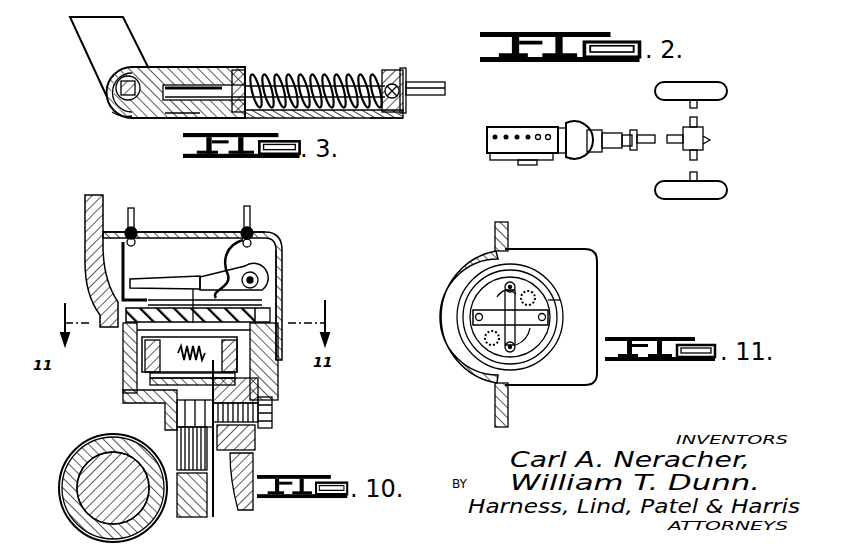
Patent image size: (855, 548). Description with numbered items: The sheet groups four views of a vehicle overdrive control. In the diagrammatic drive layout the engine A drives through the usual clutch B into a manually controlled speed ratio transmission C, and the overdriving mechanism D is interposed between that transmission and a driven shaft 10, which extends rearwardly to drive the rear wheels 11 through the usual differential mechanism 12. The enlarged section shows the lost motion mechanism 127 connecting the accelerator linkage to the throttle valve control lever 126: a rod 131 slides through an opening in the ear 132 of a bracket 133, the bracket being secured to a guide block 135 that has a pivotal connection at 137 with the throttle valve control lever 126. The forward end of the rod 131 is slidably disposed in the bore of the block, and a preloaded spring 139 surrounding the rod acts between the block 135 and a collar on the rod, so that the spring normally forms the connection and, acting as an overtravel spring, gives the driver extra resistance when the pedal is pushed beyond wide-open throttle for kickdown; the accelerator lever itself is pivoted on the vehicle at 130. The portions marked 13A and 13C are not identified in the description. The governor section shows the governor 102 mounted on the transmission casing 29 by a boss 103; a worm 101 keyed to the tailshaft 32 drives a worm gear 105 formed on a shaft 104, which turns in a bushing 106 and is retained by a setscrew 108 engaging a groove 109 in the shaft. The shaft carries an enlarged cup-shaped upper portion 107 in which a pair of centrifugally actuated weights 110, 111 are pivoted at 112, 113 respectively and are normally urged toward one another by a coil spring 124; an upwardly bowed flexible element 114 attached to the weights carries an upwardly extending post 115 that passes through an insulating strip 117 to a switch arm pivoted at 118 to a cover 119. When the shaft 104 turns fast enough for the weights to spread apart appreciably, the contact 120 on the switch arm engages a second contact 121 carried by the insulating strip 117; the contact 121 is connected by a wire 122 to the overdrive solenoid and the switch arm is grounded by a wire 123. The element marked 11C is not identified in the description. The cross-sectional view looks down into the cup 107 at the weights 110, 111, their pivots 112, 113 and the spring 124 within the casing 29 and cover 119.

In FIG. 3, the throttle valve control lever 126 is at (94, 46).
In FIG. 3, the lost motion mechanism 127 is at (153, 63).
In FIG. 3, the guide block 135 is at (204, 75).
In FIG. 3, the pivotal connection 137 is at (110, 98).
In FIG. 3, the housing end portion 13A is at (128, 118).
In FIG. 3, the housing wall portion 13C is at (183, 119).
In FIG. 3, the preloaded spring 139 is at (347, 56).
In FIG. 3, the pivot 130 is at (387, 73).
In FIG. 3, the ear 132 is at (404, 70).
In FIG. 3, the rod 131 is at (419, 82).
In FIG. 3, the bracket 133 is at (376, 120).
In FIG. 2, the engine A is at (537, 128).
In FIG. 2, the clutch B is at (592, 100).
In FIG. 2, the speed ratio transmission C is at (585, 153).
In FIG. 2, the overdriving mechanism D is at (613, 148).
In FIG. 2, the driven shaft 10 is at (641, 136).
In FIG. 2, the rear wheels 11 is at (718, 90).
In FIG. 2, the differential mechanism 12 is at (706, 140).
In FIG. 10, the transmission casing 29 is at (85, 208).
In FIG. 11, the transmission casing 29 is at (493, 385).
In FIG. 10, the cover 119 is at (258, 231).
In FIG. 11, the cover 119 is at (597, 270).
In FIG. 10, the pivot 118 is at (284, 252).
In FIG. 10, the governor 102 is at (289, 275).
In FIG. 10, the wire 122 is at (135, 216).
In FIG. 10, the wire 123 is at (240, 212).
In FIG. 10, the contact 120 is at (131, 270).
In FIG. 10, the second contact 121 is at (142, 302).
In FIG. 10, the lead wire 11C is at (215, 276).
In FIG. 10, the post 115 is at (282, 292).
In FIG. 10, the flexible element 114 is at (282, 313).
In FIG. 11, the flexible element 114 is at (455, 352).
In FIG. 10, the insulating strip 117 is at (121, 332).
In FIG. 10, the coil spring 124 is at (130, 358).
In FIG. 11, the coil spring 124 is at (497, 310).
In FIG. 10, the cup-shaped upper portion 107 is at (254, 371).
In FIG. 11, the cup-shaped upper portion 107 is at (553, 303).
In FIG. 10, the boss 103 is at (136, 392).
In FIG. 10, the shaft 104 is at (165, 428).
In FIG. 10, the groove 109 is at (195, 438).
In FIG. 10, the bushing 106 is at (256, 444).
In FIG. 10, the setscrew 108 is at (273, 408).
In FIG. 10, the worm gear 105 is at (215, 506).
In FIG. 10, the worm 101 is at (62, 476).
In FIG. 10, the tailshaft 32 is at (124, 494).
In FIG. 11, the centrifugally actuated weight 110 is at (488, 272).
In FIG. 11, the centrifugally actuated weight 111 is at (532, 290).
In FIG. 11, the pivot 112 is at (514, 284).
In FIG. 11, the pivot 113 is at (515, 350).